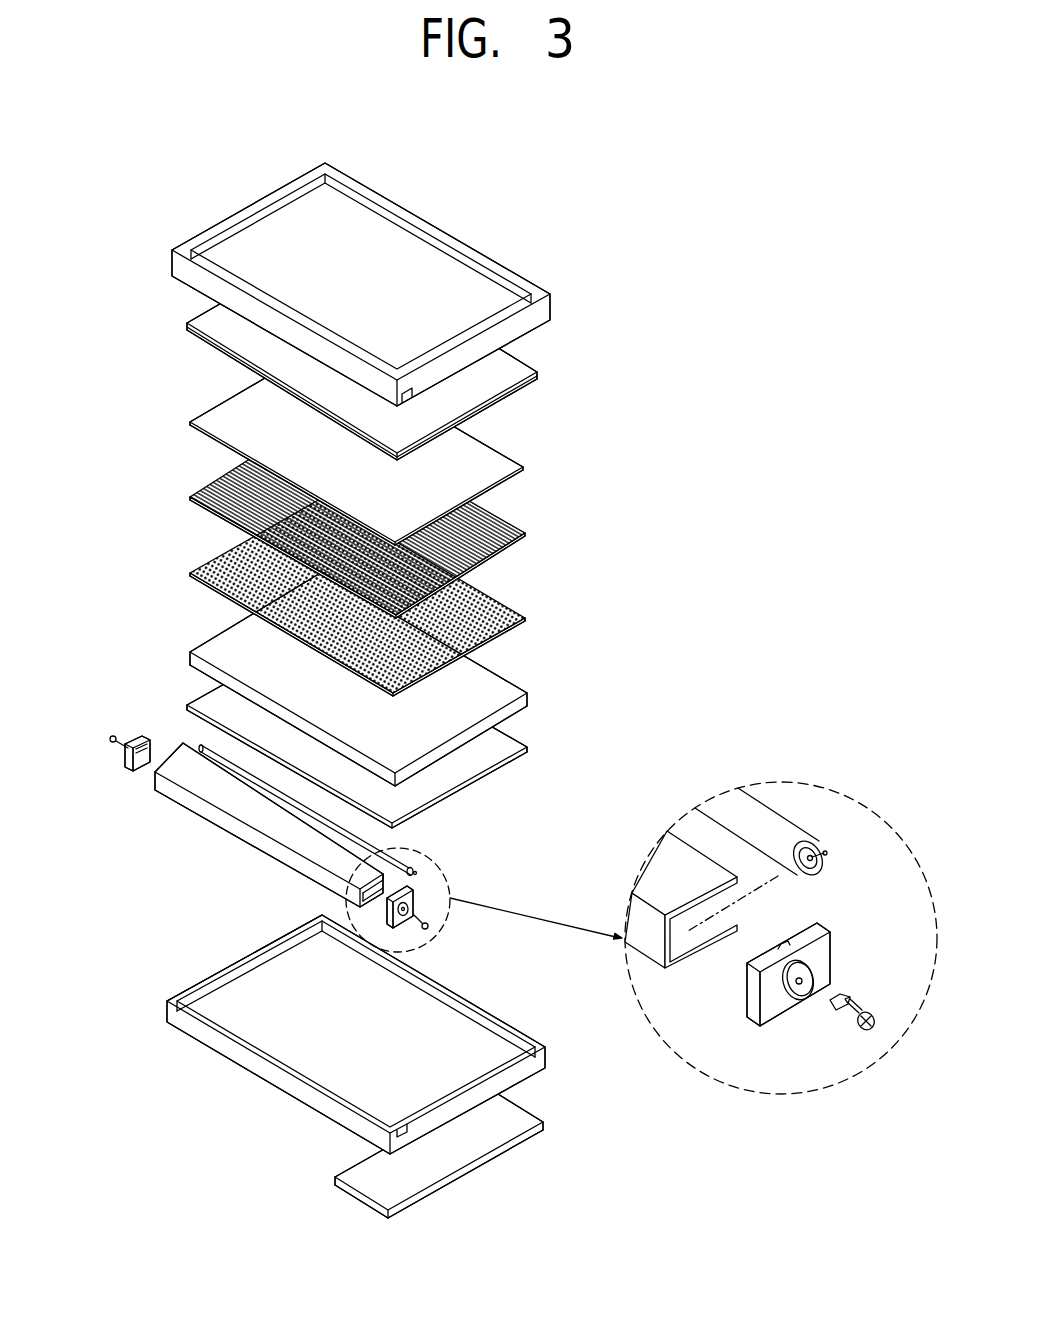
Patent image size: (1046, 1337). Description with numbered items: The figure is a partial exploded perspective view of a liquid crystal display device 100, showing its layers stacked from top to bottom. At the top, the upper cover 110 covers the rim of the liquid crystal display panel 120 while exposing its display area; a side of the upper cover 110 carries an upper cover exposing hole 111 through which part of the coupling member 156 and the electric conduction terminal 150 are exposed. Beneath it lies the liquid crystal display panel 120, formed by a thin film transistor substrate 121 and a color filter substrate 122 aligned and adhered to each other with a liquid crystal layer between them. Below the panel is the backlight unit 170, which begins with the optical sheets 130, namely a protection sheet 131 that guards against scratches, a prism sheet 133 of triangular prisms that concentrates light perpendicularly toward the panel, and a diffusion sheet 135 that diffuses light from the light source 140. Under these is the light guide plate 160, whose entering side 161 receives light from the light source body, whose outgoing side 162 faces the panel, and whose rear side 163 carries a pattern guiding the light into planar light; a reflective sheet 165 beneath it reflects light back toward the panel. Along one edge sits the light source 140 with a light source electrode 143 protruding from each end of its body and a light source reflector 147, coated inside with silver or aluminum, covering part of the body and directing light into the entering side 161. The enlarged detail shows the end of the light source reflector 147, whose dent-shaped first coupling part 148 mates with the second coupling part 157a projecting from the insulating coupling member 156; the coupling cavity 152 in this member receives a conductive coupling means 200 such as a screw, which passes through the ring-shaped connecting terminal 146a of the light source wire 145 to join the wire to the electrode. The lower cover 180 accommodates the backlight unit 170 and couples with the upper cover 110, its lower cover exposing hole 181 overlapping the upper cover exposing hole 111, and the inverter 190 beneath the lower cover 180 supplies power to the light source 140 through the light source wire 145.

The liquid crystal display device 100 is at (594, 180).
The upper cover 110 is at (172, 257).
The upper cover exposing hole 111 is at (412, 397).
The liquid crystal display panel 120 is at (103, 311).
The thin film transistor substrate 121 is at (188, 332).
The color filter substrate 122 is at (190, 326).
The optical sheets 130 is at (626, 463).
The protection sheet 131 is at (526, 468).
The prism sheet 133 is at (527, 534).
The diffusion sheet 135 is at (528, 619).
The light source 140 is at (509, 844).
The light source electrode 143 is at (817, 856).
The light source wire 145 is at (866, 1000).
The connecting terminal 146a is at (832, 1008).
The light source reflector 147 is at (677, 856).
The first coupling part 148 is at (721, 905).
The electric conduction terminal 150 is at (790, 990).
The coupling cavity 152 is at (799, 984).
The coupling member 156 is at (775, 1012).
The second coupling part 157a is at (787, 944).
The light guide plate 160 is at (390, 679).
The entering side 161 is at (196, 660).
The outgoing side 162 is at (222, 639).
The rear side 163 is at (513, 737).
The reflective sheet 165 is at (455, 740).
The backlight unit 170 is at (683, 547).
The lower cover 180 is at (545, 1055).
The lower cover exposing hole 181 is at (405, 1138).
The inverter 190 is at (400, 1188).
The coupling means 200 is at (864, 1030).